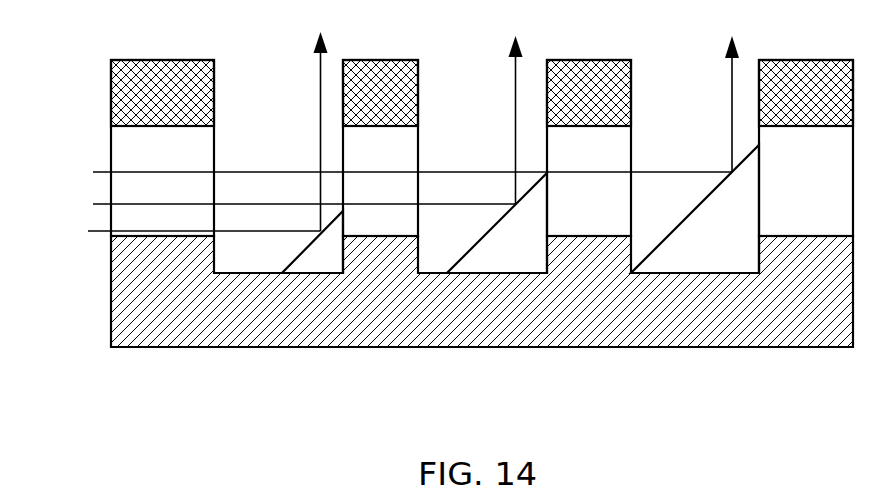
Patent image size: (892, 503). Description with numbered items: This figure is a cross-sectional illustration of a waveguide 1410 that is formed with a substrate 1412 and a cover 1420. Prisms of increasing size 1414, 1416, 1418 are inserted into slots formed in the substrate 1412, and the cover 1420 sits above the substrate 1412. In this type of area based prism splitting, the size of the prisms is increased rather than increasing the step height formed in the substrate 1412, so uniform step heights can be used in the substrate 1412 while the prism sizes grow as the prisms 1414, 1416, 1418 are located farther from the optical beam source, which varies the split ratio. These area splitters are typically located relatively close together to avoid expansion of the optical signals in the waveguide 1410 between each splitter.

The waveguide 1410 is at (111, 185).
The substrate 1412 is at (111, 297).
The prism 1414 is at (319, 273).
The prism 1416 is at (518, 273).
The prism 1418 is at (727, 273).
The cover 1420 is at (111, 99).